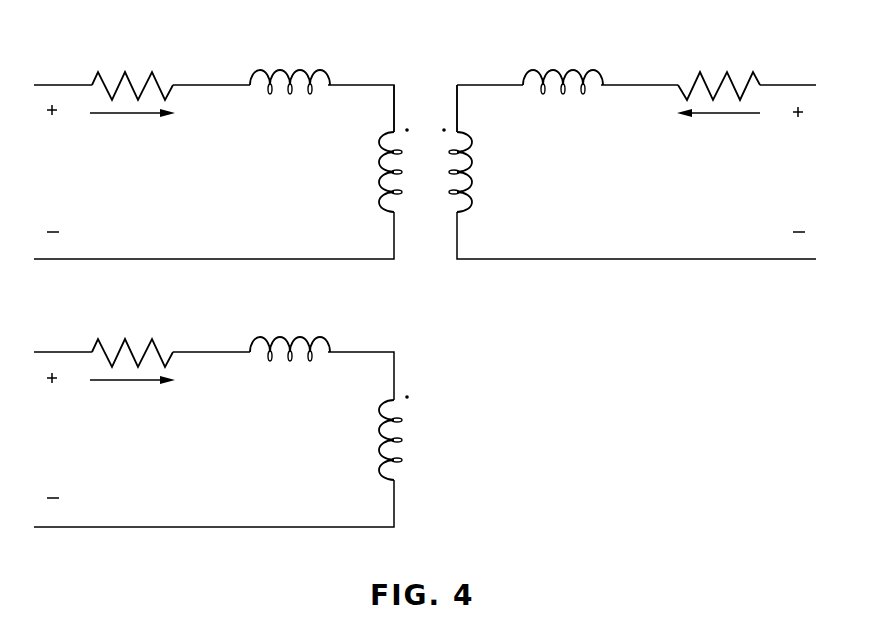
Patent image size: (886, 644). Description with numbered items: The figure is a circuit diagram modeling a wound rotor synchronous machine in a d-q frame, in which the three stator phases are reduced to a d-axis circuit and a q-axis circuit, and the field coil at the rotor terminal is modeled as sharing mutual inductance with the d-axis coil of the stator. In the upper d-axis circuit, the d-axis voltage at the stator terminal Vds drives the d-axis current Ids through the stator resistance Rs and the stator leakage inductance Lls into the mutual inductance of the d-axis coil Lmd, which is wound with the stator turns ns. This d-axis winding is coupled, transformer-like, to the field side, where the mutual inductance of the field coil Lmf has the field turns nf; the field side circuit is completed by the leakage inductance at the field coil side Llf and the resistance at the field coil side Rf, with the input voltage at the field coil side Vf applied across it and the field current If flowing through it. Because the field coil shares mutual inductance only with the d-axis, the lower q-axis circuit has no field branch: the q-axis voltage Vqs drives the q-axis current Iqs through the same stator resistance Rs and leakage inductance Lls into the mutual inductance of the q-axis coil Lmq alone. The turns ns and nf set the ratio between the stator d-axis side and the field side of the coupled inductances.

The d-axis and q-axis resistance at stator terminal Rs is at (132, 200).
The resistance at field coil side Rf is at (719, 67).
The d-axis and q-axis leakage inductance at stator terminal Lls is at (290, 197).
The leakage inductance at field coil side Llf is at (563, 63).
The mutual inductance of d-axis coil at stator terminal Lmd is at (363, 170).
The mutual inductance of field coil Lmf is at (487, 170).
The mutual inductance of q-axis coil at stator terminal Lmq is at (363, 437).
The number of turns of coil at stator terminal ns is at (388, 89).
The number of turns of field coil nf is at (458, 89).
The d-axis current at stator terminal Ids is at (132, 131).
The q-axis current at stator terminal Iqs is at (132, 399).
The current flowing in field coil If is at (718, 131).
The d-axis voltage at stator terminal Vds is at (70, 168).
The input voltage at field coil side Vf is at (806, 169).
The q-axis voltage at stator terminal Vqs is at (70, 435).